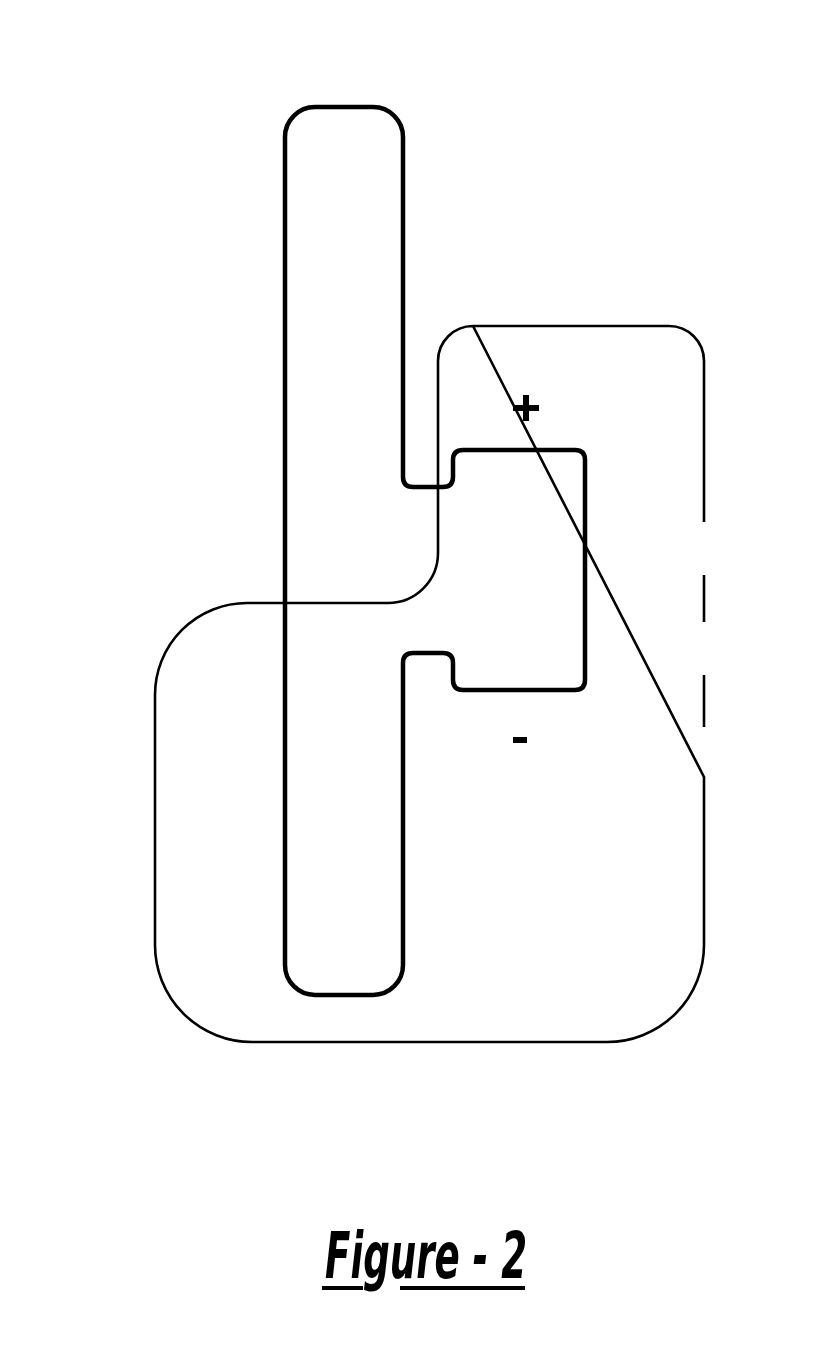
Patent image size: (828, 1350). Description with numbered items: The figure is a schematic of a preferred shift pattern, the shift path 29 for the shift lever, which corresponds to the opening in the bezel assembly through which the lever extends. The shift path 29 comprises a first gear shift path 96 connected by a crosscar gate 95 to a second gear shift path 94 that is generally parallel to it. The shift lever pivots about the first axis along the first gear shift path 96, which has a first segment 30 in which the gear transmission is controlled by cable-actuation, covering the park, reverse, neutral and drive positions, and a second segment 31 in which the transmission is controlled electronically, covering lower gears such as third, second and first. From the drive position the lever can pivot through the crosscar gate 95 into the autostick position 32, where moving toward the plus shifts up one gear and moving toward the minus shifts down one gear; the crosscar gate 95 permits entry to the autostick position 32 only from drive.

The shift path 29 is at (272, 120).
The first segment 30 is at (322, 339).
The second segment 31 is at (336, 739).
The autostick position 32 is at (553, 645).
The second gear shift path 94 is at (558, 448).
The crosscar gate 95 is at (428, 537).
The first gear shift path 96 is at (360, 107).